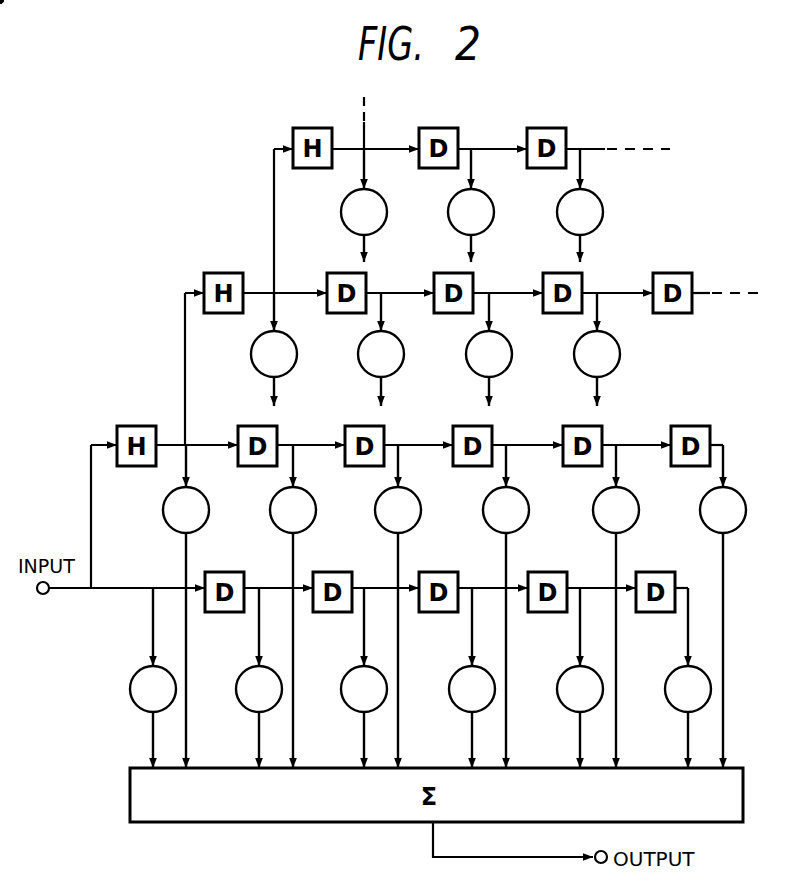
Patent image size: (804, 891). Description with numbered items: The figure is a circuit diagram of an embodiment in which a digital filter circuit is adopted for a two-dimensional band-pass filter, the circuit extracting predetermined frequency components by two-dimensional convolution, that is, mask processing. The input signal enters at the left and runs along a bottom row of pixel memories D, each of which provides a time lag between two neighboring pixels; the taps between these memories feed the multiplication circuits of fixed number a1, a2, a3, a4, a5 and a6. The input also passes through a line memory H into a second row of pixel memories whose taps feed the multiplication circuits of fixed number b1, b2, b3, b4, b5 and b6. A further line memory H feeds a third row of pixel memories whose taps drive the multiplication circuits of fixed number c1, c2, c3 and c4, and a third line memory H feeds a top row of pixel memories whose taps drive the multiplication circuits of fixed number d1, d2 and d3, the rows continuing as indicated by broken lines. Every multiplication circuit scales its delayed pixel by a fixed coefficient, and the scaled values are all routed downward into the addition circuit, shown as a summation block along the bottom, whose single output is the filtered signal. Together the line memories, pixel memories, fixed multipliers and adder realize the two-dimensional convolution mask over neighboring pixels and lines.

The multiplication circuit of fixed number a1 is at (153, 678).
The multiplication circuit of fixed number a2 is at (259, 678).
The multiplication circuit of fixed number a3 is at (364, 678).
The multiplication circuit of fixed number a4 is at (472, 678).
The multiplication circuit of fixed number a5 is at (580, 678).
The multiplication circuit of fixed number a6 is at (688, 678).
The multiplication circuit of fixed number b1 is at (186, 606).
The multiplication circuit of fixed number b2 is at (293, 606).
The multiplication circuit of fixed number b3 is at (398, 606).
The multiplication circuit of fixed number b4 is at (506, 606).
The multiplication circuit of fixed number b5 is at (616, 606).
The multiplication circuit of fixed number b6 is at (723, 606).
The multiplication circuit of fixed number c1 is at (274, 349).
The multiplication circuit of fixed number c2 is at (381, 349).
The multiplication circuit of fixed number c3 is at (489, 349).
The multiplication circuit of fixed number c4 is at (597, 349).
The multiplication circuit of fixed number d1 is at (364, 205).
The multiplication circuit of fixed number d2 is at (471, 205).
The multiplication circuit of fixed number d3 is at (580, 205).